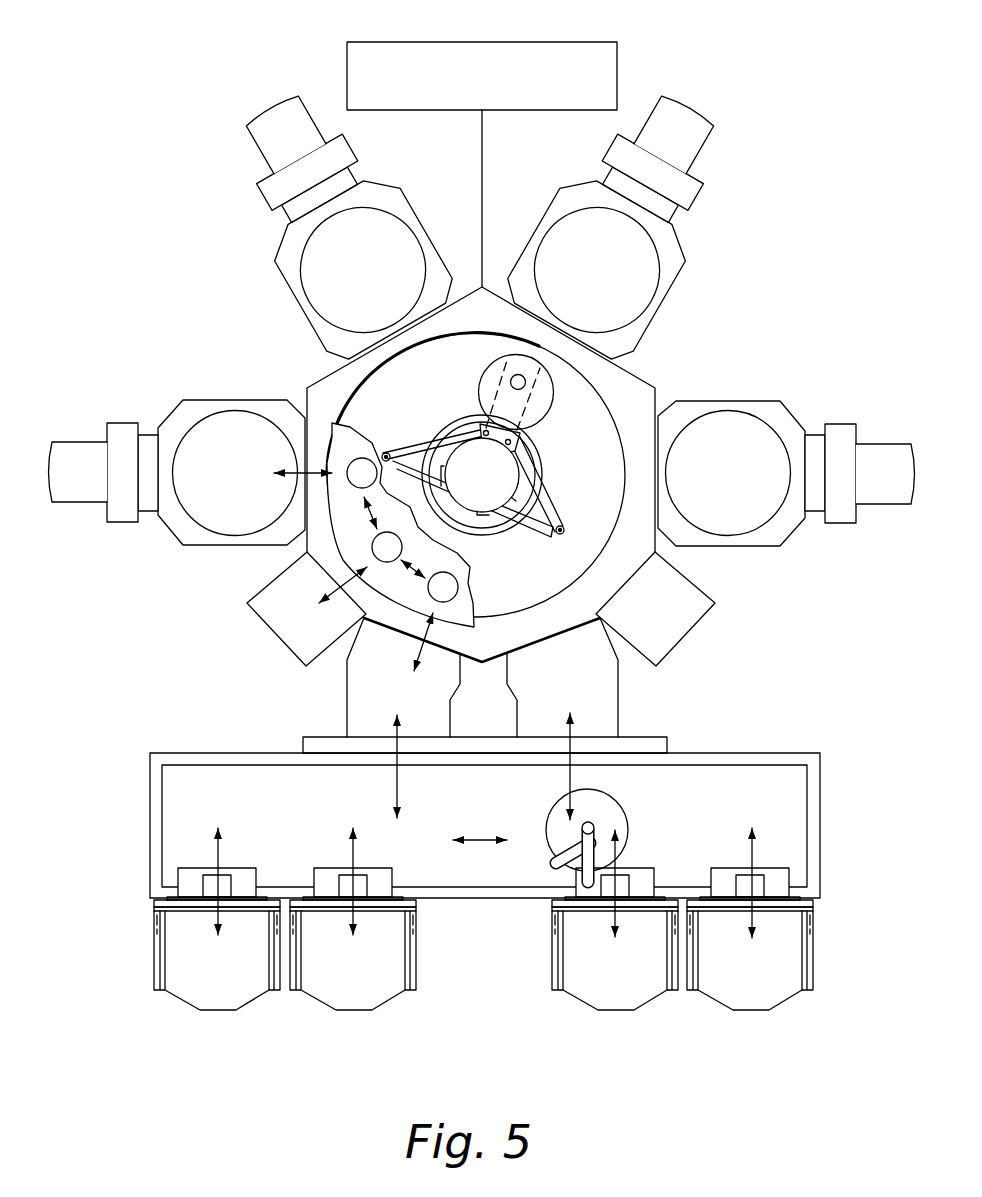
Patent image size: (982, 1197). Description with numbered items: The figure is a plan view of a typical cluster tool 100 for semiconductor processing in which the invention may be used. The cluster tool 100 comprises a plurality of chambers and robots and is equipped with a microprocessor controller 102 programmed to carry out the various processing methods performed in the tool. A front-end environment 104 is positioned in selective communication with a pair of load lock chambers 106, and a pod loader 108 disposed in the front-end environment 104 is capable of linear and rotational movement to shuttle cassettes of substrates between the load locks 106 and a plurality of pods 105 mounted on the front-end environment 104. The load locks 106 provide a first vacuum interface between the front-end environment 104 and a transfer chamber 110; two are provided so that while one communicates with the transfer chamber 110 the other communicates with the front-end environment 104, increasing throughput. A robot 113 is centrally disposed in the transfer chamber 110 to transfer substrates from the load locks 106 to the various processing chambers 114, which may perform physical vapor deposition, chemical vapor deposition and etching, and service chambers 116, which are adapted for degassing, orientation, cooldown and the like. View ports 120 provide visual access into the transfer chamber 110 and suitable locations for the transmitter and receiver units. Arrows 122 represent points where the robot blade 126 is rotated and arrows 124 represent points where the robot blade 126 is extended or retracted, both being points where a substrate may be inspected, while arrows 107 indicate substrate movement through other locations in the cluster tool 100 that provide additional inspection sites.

The cluster tool 100 is at (769, 211).
The microprocessor controller 102 is at (531, 42).
The front-end environment 104 is at (820, 807).
The pods 105 is at (154, 972).
The load lock chambers 106 is at (347, 716).
The arrows 107 is at (400, 784).
The pod loader 108 is at (548, 815).
The transfer chamber 110 is at (640, 377).
The robot 113 is at (500, 478).
The processing chambers 114 is at (290, 297).
The service chambers 116 is at (267, 630).
The view ports 120 is at (459, 587).
The arrows 122 is at (416, 569).
The arrows 124 is at (322, 470).
The robot blade 126 is at (521, 438).